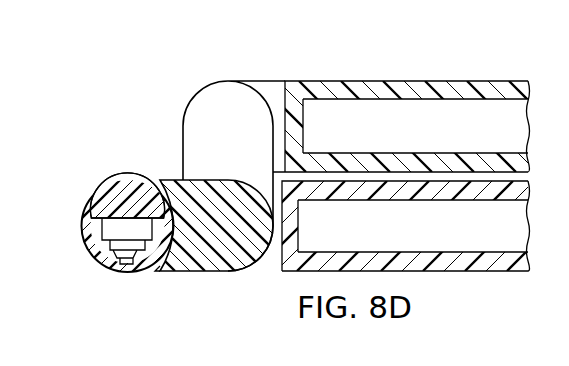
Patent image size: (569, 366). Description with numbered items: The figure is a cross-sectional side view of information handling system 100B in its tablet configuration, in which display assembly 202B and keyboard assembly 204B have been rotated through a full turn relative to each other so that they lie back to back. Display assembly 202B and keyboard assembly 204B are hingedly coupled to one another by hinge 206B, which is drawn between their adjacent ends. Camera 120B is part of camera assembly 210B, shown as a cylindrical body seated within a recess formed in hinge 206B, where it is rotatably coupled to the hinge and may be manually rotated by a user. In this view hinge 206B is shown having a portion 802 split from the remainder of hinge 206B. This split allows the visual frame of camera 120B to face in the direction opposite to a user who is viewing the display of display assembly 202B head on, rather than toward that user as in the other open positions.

The information handling system 100B is at (463, 52).
The display assembly 202B is at (345, 81).
The keyboard assembly 204B is at (488, 273).
The hinge 206B is at (222, 83).
The portion 802 is at (232, 188).
The camera assembly 210B is at (131, 226).
The camera 120B is at (125, 272).